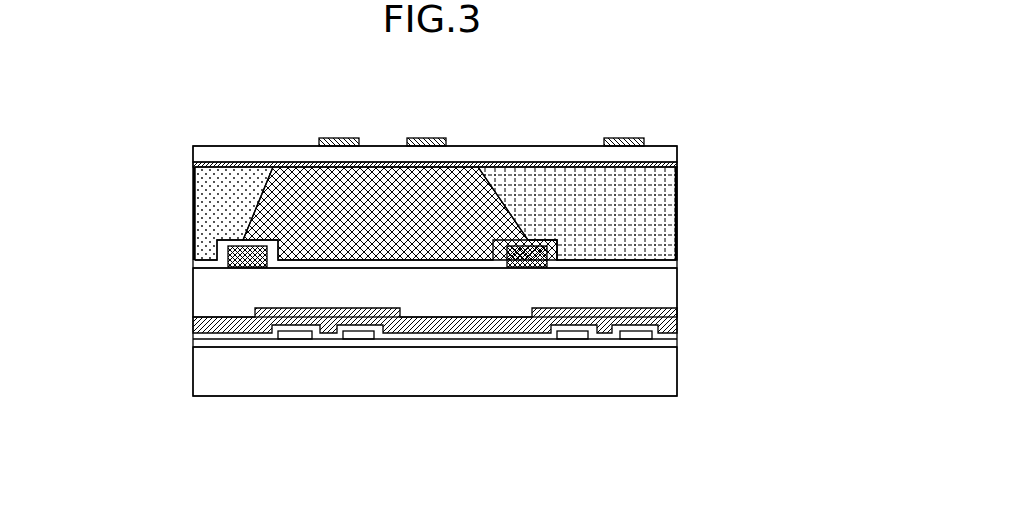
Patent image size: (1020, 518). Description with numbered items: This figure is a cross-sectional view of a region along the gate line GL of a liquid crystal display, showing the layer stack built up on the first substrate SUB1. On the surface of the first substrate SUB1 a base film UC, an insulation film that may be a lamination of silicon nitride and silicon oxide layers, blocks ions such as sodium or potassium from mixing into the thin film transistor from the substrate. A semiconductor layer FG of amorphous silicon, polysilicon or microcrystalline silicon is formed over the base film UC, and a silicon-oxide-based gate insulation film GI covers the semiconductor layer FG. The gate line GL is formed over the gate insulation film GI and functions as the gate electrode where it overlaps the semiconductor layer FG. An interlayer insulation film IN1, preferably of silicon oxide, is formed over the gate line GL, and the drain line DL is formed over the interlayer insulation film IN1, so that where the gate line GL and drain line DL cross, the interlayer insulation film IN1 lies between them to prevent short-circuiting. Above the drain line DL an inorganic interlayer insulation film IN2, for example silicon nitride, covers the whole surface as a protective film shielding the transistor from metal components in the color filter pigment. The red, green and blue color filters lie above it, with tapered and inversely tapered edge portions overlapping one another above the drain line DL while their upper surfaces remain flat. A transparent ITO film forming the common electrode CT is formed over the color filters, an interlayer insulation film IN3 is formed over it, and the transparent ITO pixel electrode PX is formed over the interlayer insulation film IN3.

The pixel electrode PX is at (343, 138).
The interlayer insulation film IN3 is at (652, 149).
The common electrode CT is at (193, 162).
The interlayer insulation film IN2 is at (652, 262).
The drain line DL is at (233, 257).
The interlayer insulation film IN1 is at (652, 290).
The gate line GL is at (653, 333).
The gate insulation film GI is at (213, 337).
The semiconductor layer FG is at (297, 336).
The base film UC is at (653, 343).
The first substrate SUB1 is at (653, 378).